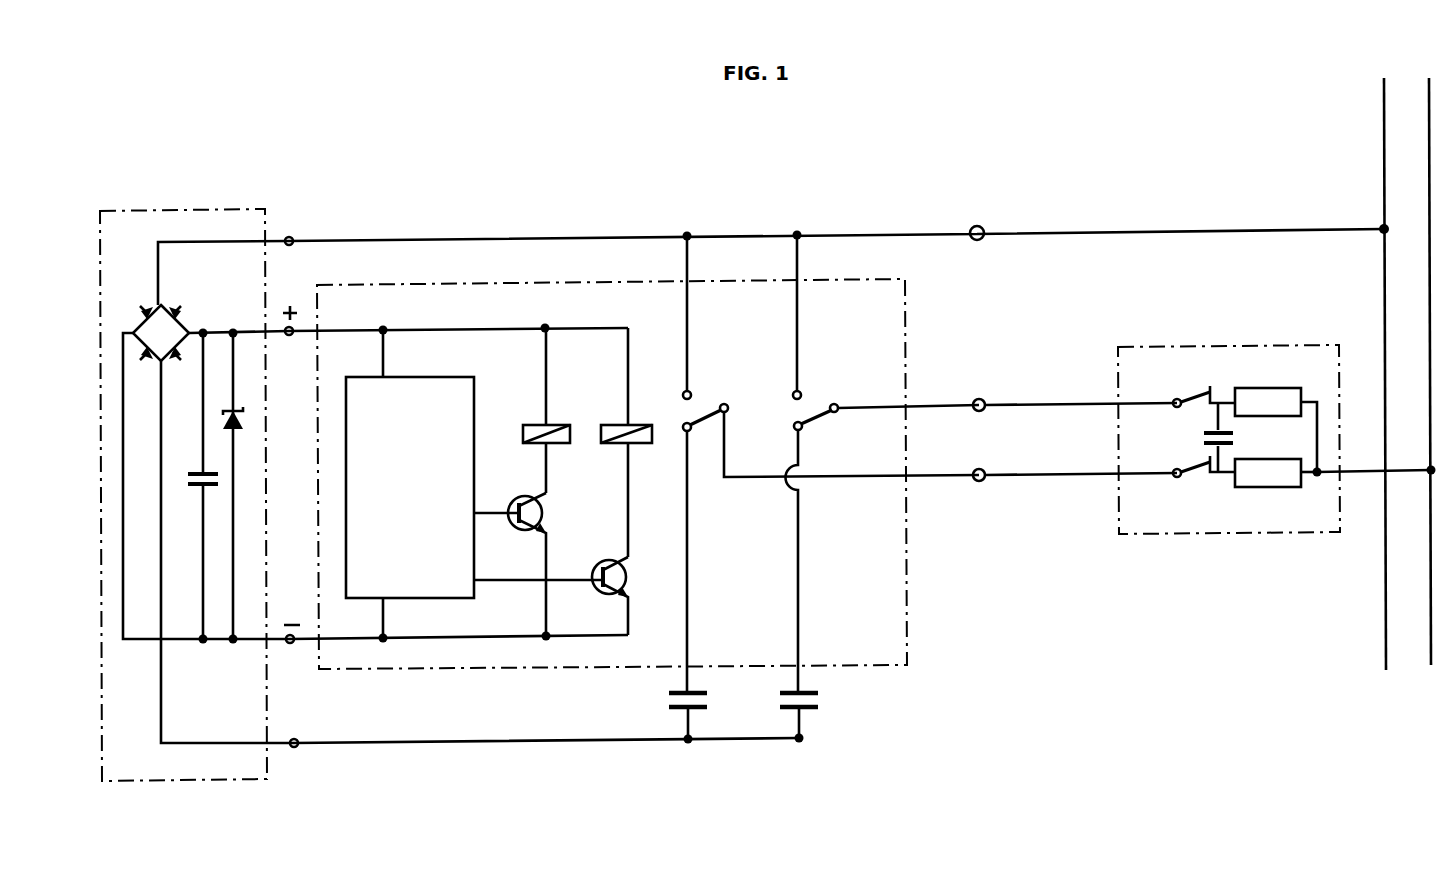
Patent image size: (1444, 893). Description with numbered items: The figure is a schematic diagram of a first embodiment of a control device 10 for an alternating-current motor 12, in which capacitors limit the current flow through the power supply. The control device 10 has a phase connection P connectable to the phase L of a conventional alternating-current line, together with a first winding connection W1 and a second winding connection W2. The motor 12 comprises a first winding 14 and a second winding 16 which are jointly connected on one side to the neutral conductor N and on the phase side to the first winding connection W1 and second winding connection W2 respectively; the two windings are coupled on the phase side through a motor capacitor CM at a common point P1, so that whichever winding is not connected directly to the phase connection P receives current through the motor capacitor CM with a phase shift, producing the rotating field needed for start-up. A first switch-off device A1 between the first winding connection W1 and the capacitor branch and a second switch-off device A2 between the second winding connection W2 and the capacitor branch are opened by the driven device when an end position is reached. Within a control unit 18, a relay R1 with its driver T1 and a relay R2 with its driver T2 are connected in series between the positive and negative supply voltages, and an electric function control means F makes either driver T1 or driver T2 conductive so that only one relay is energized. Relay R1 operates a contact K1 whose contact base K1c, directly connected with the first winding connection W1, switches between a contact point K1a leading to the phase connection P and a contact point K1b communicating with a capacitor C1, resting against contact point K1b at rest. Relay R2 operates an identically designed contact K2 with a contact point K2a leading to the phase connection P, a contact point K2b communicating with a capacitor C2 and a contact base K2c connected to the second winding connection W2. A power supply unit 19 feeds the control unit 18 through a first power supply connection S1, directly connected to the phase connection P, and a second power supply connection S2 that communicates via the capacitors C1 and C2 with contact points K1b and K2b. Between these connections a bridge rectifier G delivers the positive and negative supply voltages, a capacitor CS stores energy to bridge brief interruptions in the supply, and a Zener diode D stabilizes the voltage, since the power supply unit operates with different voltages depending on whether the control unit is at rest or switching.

The control device 10 is at (557, 190).
The alternating-current motor 12 is at (1229, 430).
The first winding 14 is at (1268, 480).
The second winding 16 is at (1280, 395).
The control unit 18 is at (630, 265).
The power supply unit 19 is at (186, 198).
The bridge rectifier G is at (150, 315).
The Zener diode D is at (236, 410).
The capacitor CS is at (190, 482).
The first power supply connection S1 is at (293, 238).
The second power supply connection S2 is at (296, 748).
The function control means F is at (410, 487).
The relay R1 is at (533, 424).
The relay R2 is at (606, 424).
The driver T1 is at (514, 500).
The driver T2 is at (598, 566).
The contact K1 is at (805, 464).
The contact point K1a is at (683, 393).
The contact point K1b is at (686, 432).
The contact base K1c is at (728, 413).
The contact K2 is at (861, 464).
The contact point K2a is at (793, 393).
The contact point K2b is at (803, 430).
The contact base K2c is at (838, 405).
The capacitor C1 is at (668, 700).
The capacitor C2 is at (820, 700).
The phase connection P is at (978, 226).
The first winding connection W1 is at (979, 481).
The second winding connection W2 is at (979, 399).
The first switch-off device A1 is at (1199, 470).
The second switch-off device A2 is at (1190, 397).
The motor connection point P1 is at (1221, 478).
The motor capacitor CM is at (1203, 437).
The phase L is at (1383, 363).
The neutral conductor N is at (1431, 360).